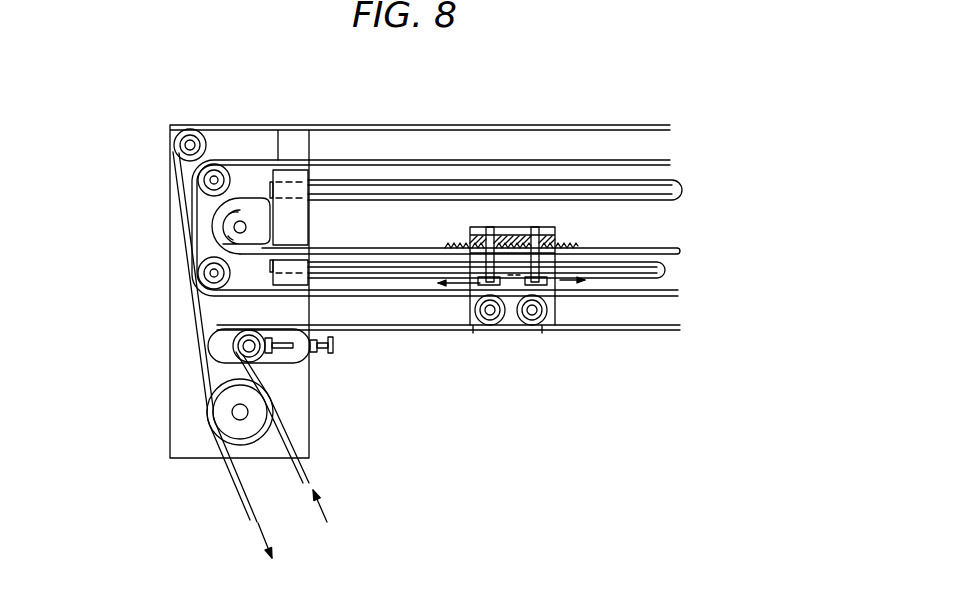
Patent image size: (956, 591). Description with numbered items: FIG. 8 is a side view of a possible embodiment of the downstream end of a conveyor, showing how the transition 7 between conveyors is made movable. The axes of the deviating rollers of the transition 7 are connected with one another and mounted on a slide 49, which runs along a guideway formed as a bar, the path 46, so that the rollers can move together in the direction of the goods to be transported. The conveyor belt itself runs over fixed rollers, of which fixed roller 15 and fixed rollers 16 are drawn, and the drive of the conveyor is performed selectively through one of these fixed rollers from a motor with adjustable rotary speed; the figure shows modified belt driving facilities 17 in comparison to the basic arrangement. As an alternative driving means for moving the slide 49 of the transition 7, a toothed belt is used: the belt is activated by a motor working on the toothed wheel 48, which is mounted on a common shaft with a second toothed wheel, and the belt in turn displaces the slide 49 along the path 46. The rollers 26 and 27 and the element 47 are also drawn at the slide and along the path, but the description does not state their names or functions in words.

The lower transition 7 is at (510, 331).
The fixed roller 15 is at (193, 133).
The fixed roller 16 is at (203, 275).
The belt driving facilities 17 is at (258, 407).
The roller 26 is at (537, 324).
The roller 27 is at (482, 323).
The path 46 is at (393, 263).
The threaded spindle 47 is at (345, 251).
The toothed wheel 48 is at (226, 236).
The slide 49 is at (525, 258).